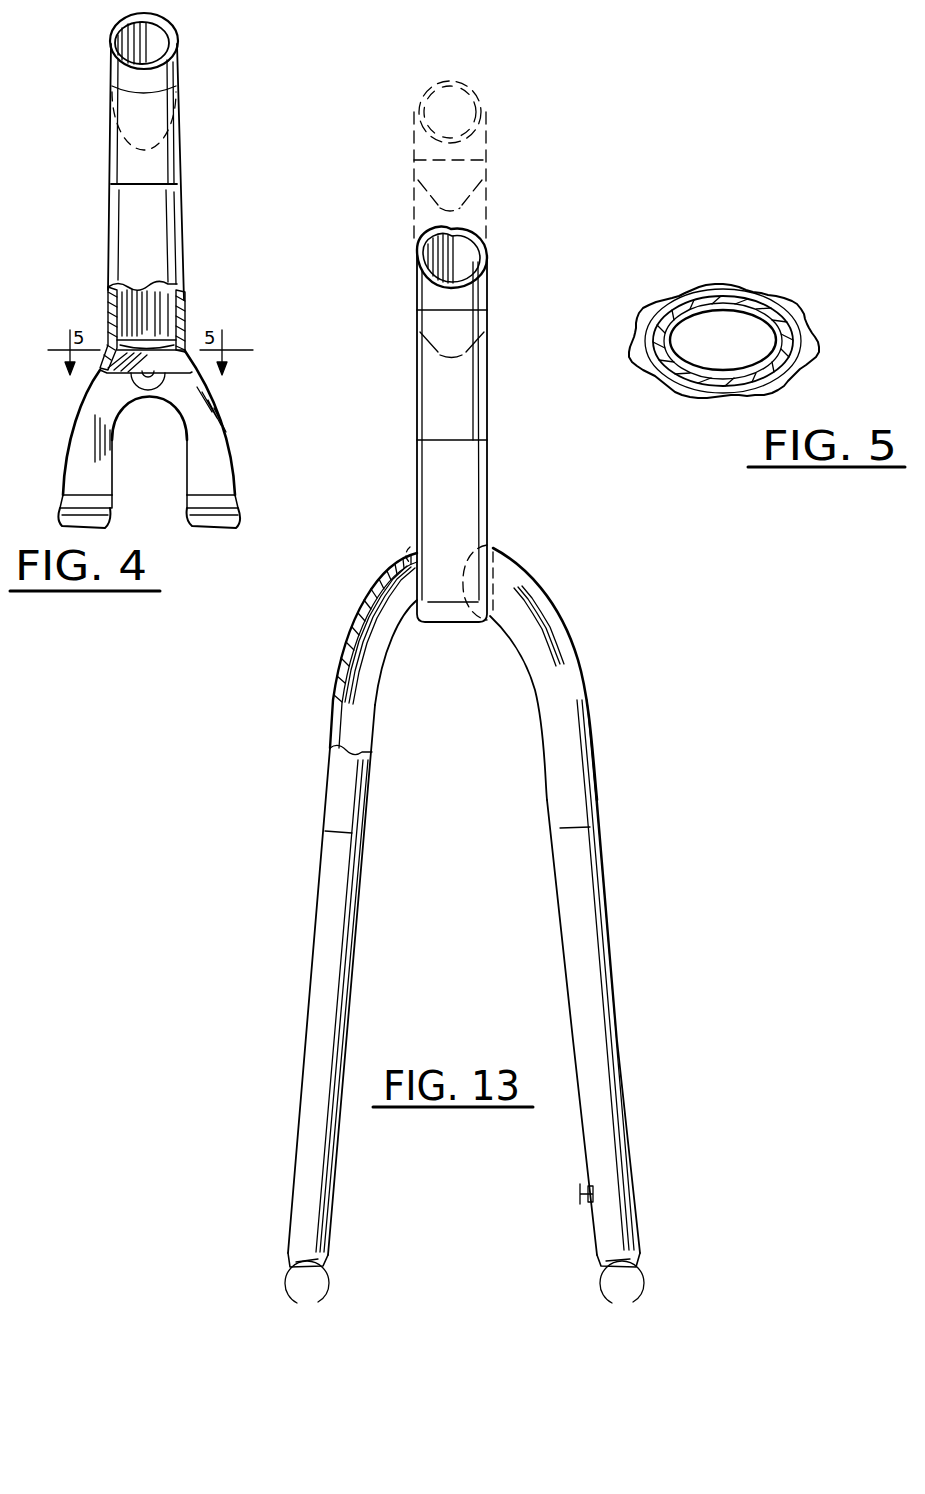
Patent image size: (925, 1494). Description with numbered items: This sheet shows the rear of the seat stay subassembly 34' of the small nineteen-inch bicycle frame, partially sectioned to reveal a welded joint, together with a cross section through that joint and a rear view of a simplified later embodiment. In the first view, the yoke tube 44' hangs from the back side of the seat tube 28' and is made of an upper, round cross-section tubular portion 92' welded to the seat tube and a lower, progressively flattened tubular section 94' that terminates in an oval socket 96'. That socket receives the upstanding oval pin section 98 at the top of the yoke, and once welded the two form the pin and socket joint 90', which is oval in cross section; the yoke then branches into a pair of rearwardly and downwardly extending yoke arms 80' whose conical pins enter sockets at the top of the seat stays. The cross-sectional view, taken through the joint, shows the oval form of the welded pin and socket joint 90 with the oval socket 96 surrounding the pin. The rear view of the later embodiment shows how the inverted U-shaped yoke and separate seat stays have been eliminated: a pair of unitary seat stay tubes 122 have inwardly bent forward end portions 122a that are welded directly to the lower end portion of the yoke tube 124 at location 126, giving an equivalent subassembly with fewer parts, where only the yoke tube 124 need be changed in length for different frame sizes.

In FIG. 4, the seat tube 28' is at (185, 156).
In FIG. 4, the upper round cross-section tubular portion 92' is at (144, 97).
In FIG. 4, the lower progressively flattened tubular section 94' is at (142, 264).
In FIG. 4, the yoke tube 44' is at (228, 204).
In FIG. 4, the oval socket 96' is at (122, 315).
In FIG. 4, the oval pin section 98 is at (147, 356).
In FIG. 4, the pin and socket joint 90' is at (189, 347).
In FIG. 4, the seat stay subassembly 34' is at (173, 423).
In FIG. 4, the yoke arm 80' is at (162, 475).
In FIG. 5, the pin and socket joint 90 is at (724, 307).
In FIG. 5, the oval socket 96 is at (771, 341).
In FIG. 13, the yoke tube 124 is at (463, 401).
In FIG. 13, the weld location 126 is at (407, 550).
In FIG. 13, the forward end portion 122a is at (352, 640).
In FIG. 13, the unitary seat stay tube 122 is at (332, 933).